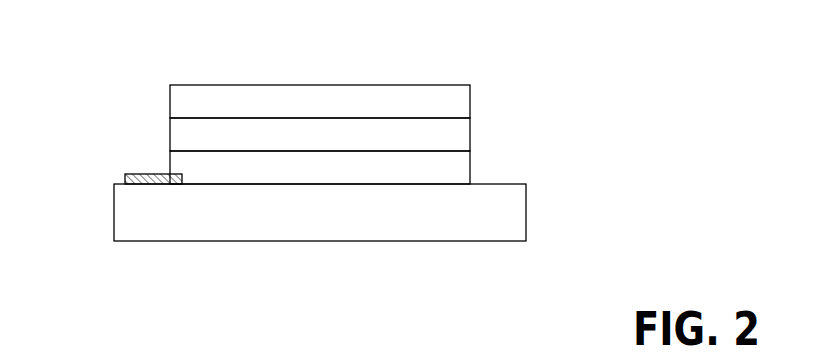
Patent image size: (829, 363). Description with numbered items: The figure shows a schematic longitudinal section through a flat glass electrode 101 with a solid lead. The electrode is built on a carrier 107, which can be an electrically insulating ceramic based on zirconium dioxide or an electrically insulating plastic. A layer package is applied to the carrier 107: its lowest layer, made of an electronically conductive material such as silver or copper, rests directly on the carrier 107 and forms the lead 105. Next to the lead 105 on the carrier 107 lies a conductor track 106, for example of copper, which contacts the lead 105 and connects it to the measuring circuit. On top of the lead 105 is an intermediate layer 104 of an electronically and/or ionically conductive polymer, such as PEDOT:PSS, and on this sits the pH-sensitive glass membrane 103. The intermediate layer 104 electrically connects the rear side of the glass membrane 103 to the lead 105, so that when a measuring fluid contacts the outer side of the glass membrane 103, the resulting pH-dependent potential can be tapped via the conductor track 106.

The flat glass electrode 101 is at (567, 88).
The glass membrane 103 is at (185, 97).
The intermediate layer 104 is at (182, 135).
The lead 105 is at (458, 168).
The conductor track 106 is at (125, 176).
The carrier 107 is at (508, 212).